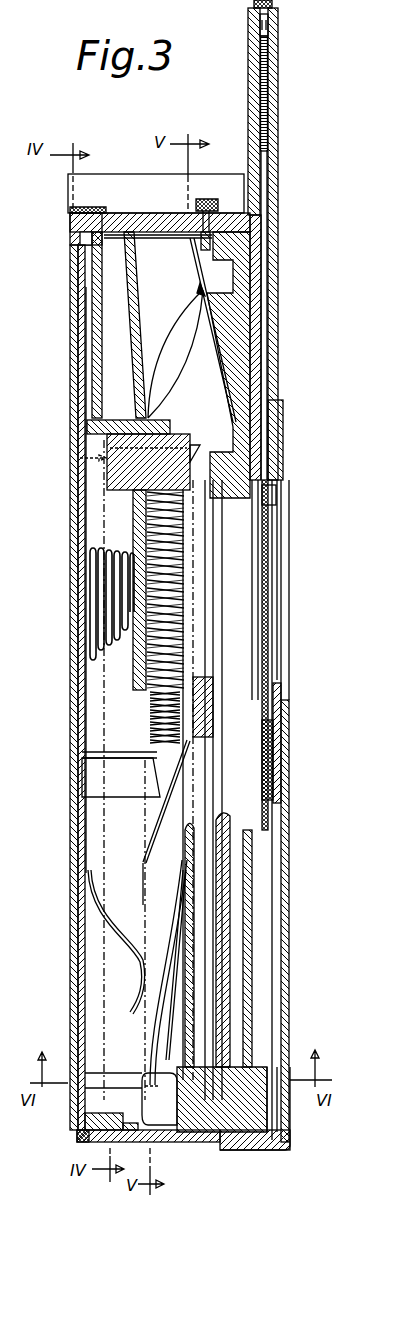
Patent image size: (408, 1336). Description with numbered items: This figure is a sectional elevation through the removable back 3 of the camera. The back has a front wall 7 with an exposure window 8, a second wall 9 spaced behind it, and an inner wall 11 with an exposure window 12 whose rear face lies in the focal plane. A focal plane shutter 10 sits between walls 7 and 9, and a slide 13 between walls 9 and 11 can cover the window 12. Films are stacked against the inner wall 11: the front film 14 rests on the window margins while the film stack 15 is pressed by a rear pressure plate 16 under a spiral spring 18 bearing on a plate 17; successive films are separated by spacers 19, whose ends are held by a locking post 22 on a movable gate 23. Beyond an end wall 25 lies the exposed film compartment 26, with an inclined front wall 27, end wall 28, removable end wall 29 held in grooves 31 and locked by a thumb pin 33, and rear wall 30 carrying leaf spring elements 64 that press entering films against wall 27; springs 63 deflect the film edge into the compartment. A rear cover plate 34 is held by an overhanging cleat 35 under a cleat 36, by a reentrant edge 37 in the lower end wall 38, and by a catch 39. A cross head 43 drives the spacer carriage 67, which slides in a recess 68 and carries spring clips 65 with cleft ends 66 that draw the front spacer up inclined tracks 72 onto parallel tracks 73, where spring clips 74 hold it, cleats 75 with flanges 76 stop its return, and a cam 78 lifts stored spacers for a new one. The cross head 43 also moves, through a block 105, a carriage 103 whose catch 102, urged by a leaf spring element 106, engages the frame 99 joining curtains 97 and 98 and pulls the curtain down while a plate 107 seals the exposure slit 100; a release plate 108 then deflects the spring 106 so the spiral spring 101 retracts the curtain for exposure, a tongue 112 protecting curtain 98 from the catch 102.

The removable back 3 is at (280, 244).
The front wall 7 is at (280, 302).
The exposure window 8 is at (289, 592).
The second wall 9 is at (236, 681).
The focal plane shutter 10 is at (276, 509).
The inner wall 11 is at (240, 471).
The exposure window 12 is at (203, 541).
The slide 13 is at (230, 863).
The front film 14 is at (183, 611).
The film stack 15 is at (144, 709).
The rear pressure plate 16 is at (136, 671).
The plate 17 is at (80, 578).
The spiral spring 18 is at (100, 609).
The spacers 19 is at (148, 731).
The locking post 22 is at (118, 467).
The gate 23 is at (80, 457).
The end wall 25 is at (90, 429).
The exposed film compartment 26 is at (147, 402).
The inclined front wall 27 is at (225, 379).
The end wall 28 is at (220, 452).
The end wall 29 is at (180, 238).
The rear wall 30 is at (140, 301).
The grooves 31 is at (222, 220).
The thumb pin 33 is at (206, 199).
The rear cover plate 34 is at (74, 271).
The overhanging cleat 35 is at (90, 247).
The cleat 36 is at (80, 236).
The reentrant edge 37 is at (78, 1136).
The lower end wall 38 is at (86, 1118).
The catch 39 is at (78, 209).
The cross head 43 is at (268, 1119).
The springs 63 is at (196, 445).
The leaf spring elements 64 is at (194, 346).
The spring clips 65 is at (152, 1033).
The cleft ends 66 is at (150, 1049).
The carriage 67 is at (183, 867).
The recess 68 is at (187, 827).
The inclined tracks 72 is at (160, 826).
The parallel tracks 73 is at (142, 877).
The spring clips 74 is at (134, 922).
The cleats 75 is at (88, 777).
The flanges 76 is at (84, 753).
The cam 78 is at (162, 1078).
The curtain 97 is at (268, 361).
The curtain 98 is at (268, 643).
The frame 99 is at (270, 163).
The exposure slit 100 is at (278, 446).
The spiral spring 101 is at (264, 118).
The catch 102 is at (278, 769).
The carriage 103 is at (264, 927).
The block 105 is at (255, 1070).
The leaf spring element 106 is at (276, 801).
The plate 107 is at (278, 731).
The release plate 108 is at (268, 813).
The tongue 112 is at (264, 621).